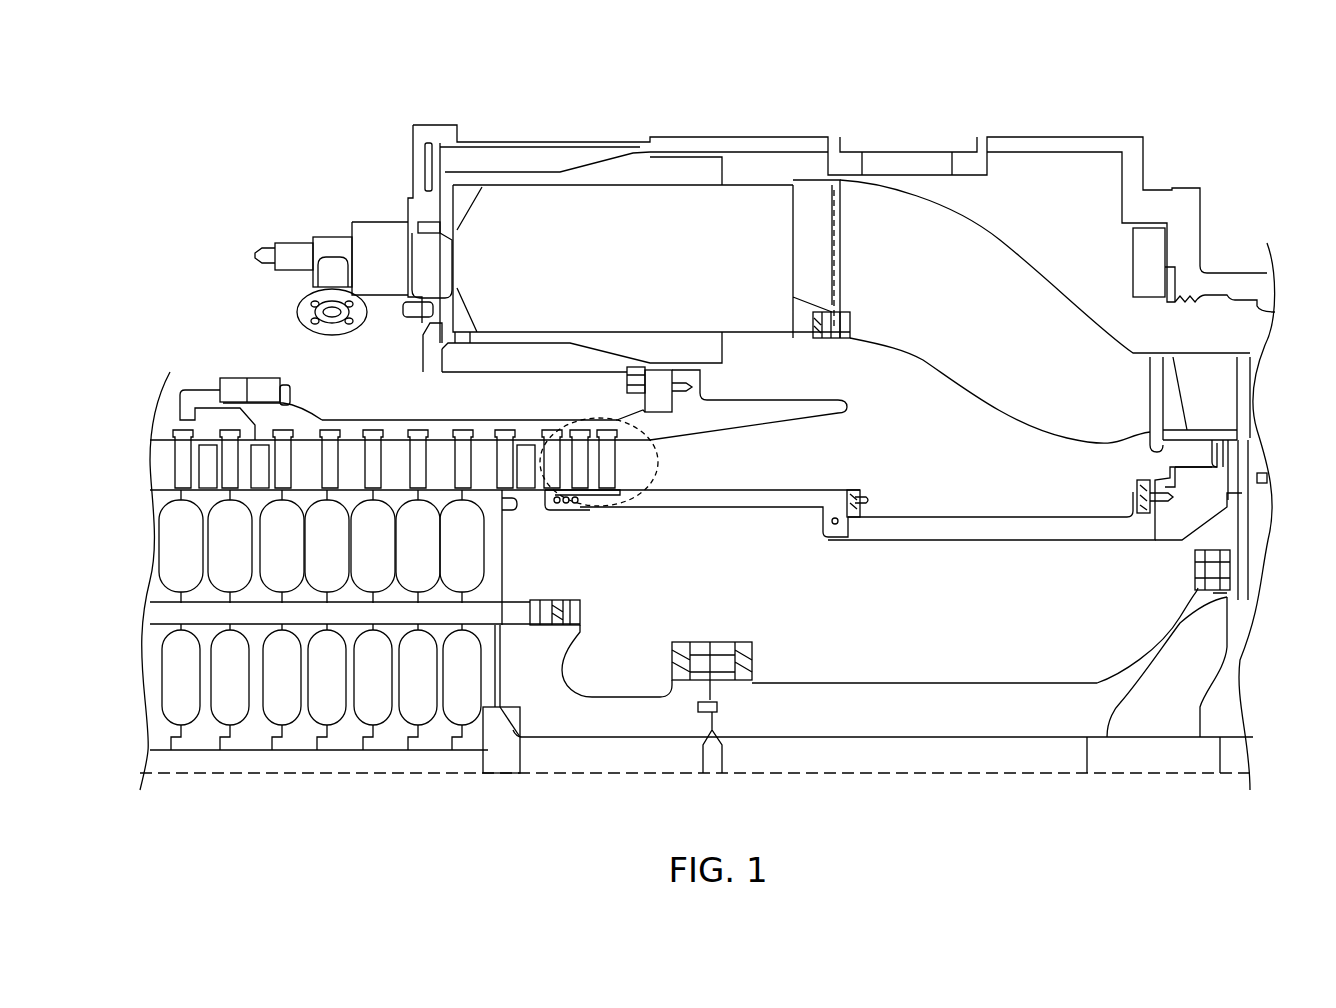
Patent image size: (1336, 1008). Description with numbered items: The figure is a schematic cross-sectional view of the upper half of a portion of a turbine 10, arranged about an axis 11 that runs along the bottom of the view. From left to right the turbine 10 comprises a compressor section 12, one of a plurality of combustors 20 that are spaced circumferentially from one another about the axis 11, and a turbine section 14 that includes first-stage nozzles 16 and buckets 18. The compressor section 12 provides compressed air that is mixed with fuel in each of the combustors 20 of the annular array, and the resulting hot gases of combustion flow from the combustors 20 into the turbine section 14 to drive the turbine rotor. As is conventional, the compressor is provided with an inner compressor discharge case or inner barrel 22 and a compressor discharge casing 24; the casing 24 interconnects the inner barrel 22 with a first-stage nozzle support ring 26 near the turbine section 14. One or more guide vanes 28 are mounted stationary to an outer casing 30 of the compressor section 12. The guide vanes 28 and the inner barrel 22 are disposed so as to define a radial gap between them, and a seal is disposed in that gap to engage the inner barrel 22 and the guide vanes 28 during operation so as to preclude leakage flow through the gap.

The turbine 10 is at (421, 97).
The axis 11 is at (443, 776).
The compressor section 12 is at (217, 533).
The turbine section 14 is at (1197, 360).
The first-stage nozzles 16 is at (1243, 418).
The buckets 18 is at (1255, 370).
The combustor 20 is at (598, 195).
The inner barrel 22 is at (808, 490).
The compressor discharge casing 24 is at (990, 535).
The first-stage nozzle support ring 26 is at (1178, 520).
The guide vanes 28 is at (607, 440).
The outer casing 30 is at (527, 430).